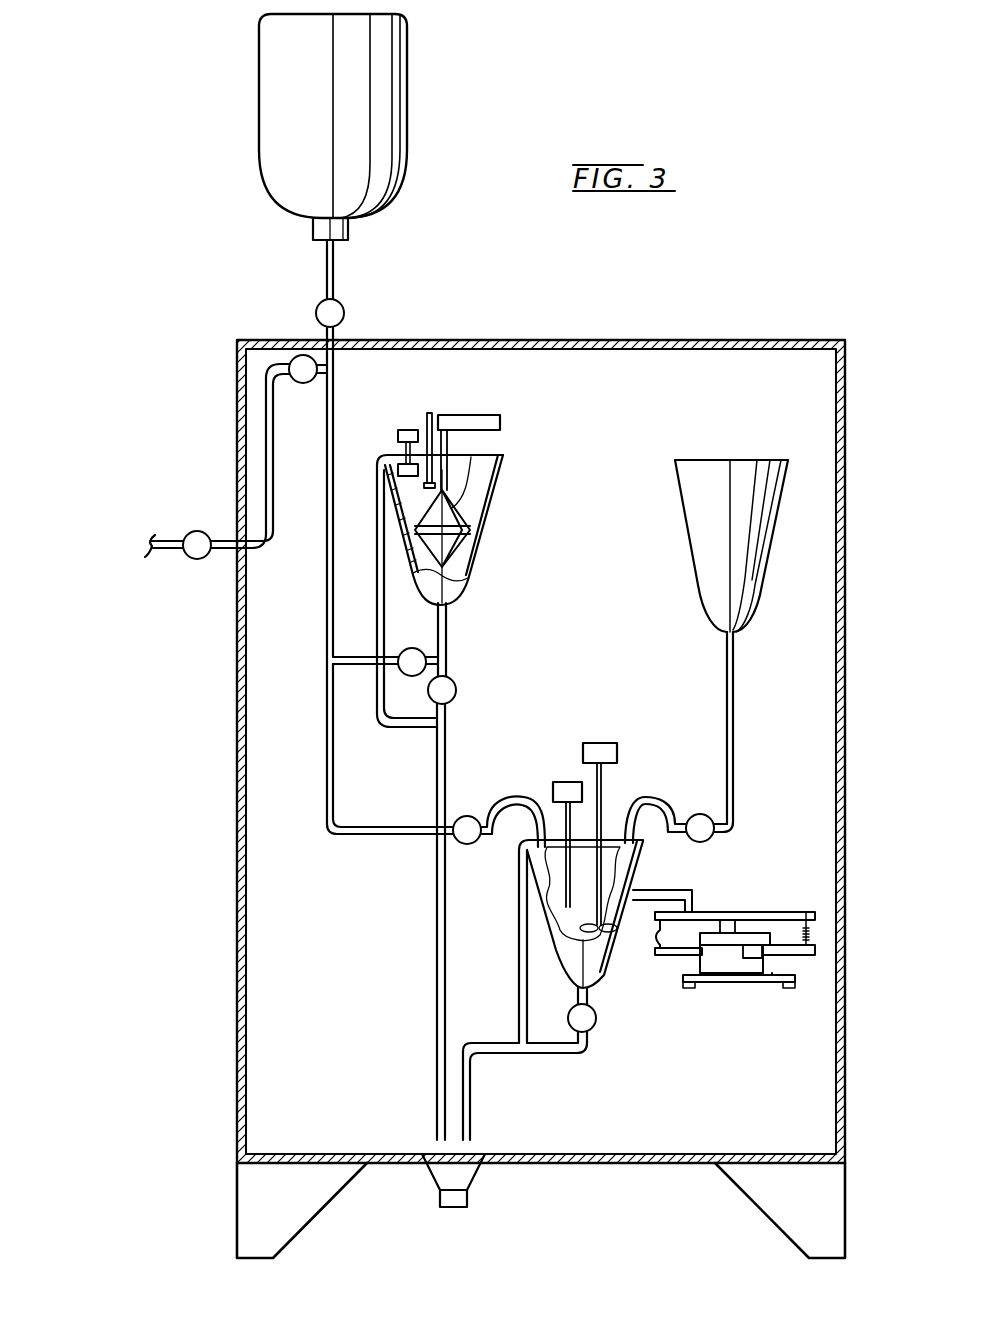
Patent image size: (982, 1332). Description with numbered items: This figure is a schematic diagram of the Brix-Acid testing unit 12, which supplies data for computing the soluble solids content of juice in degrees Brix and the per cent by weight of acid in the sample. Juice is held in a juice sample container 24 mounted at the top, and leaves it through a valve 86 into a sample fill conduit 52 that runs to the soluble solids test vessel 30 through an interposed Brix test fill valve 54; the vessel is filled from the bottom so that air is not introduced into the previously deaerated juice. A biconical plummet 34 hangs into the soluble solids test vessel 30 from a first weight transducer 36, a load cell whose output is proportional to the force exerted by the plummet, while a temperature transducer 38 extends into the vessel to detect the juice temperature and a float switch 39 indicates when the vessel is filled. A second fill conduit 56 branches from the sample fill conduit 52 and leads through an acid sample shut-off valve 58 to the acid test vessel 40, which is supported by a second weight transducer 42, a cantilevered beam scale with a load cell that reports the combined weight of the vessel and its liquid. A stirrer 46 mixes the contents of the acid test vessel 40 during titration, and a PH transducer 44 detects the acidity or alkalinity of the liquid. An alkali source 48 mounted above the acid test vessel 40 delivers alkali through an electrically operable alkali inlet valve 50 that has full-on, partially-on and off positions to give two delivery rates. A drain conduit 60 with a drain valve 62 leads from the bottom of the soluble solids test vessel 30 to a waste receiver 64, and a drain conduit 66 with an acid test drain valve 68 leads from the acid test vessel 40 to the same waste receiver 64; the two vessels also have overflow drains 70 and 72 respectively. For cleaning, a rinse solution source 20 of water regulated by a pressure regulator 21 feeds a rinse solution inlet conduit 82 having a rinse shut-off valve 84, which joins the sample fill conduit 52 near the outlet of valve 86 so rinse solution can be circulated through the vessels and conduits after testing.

The testing unit 12 is at (207, 752).
The rinse solution source 20 is at (120, 573).
The pressure regulator 21 is at (197, 560).
The juice sample container 24 is at (400, 97).
The soluble solids test vessel 30 is at (470, 587).
The plummet 34 is at (470, 528).
The first weight transducer 36 is at (472, 416).
The temperature transducer 38 is at (430, 413).
The float switch 39 is at (405, 430).
The acid test vessel 40 is at (603, 978).
The second weight transducer 42 is at (725, 912).
The PH transducer 44 is at (567, 782).
The stirrer 46 is at (600, 743).
The alkali source 48 is at (700, 530).
The alkali inlet valve 50 is at (701, 814).
The sample fill conduit 52 is at (326, 580).
The Brix test fill valve 54 is at (402, 651).
The fill conduit 56 is at (334, 794).
The acid sample shut-off valve 58 is at (470, 815).
The drain conduit 60 is at (436, 992).
The drain valve 62 is at (456, 683).
The waste receiver 64 is at (468, 1178).
The drain conduit 66 is at (552, 1055).
The acid test drain valve 68 is at (597, 1020).
The overflow drain 70 is at (377, 600).
The overflow drain 72 is at (518, 963).
The rinse solution inlet conduit 82 is at (274, 490).
The rinse shut-off valve 84 is at (298, 384).
The valve 86 is at (341, 305).